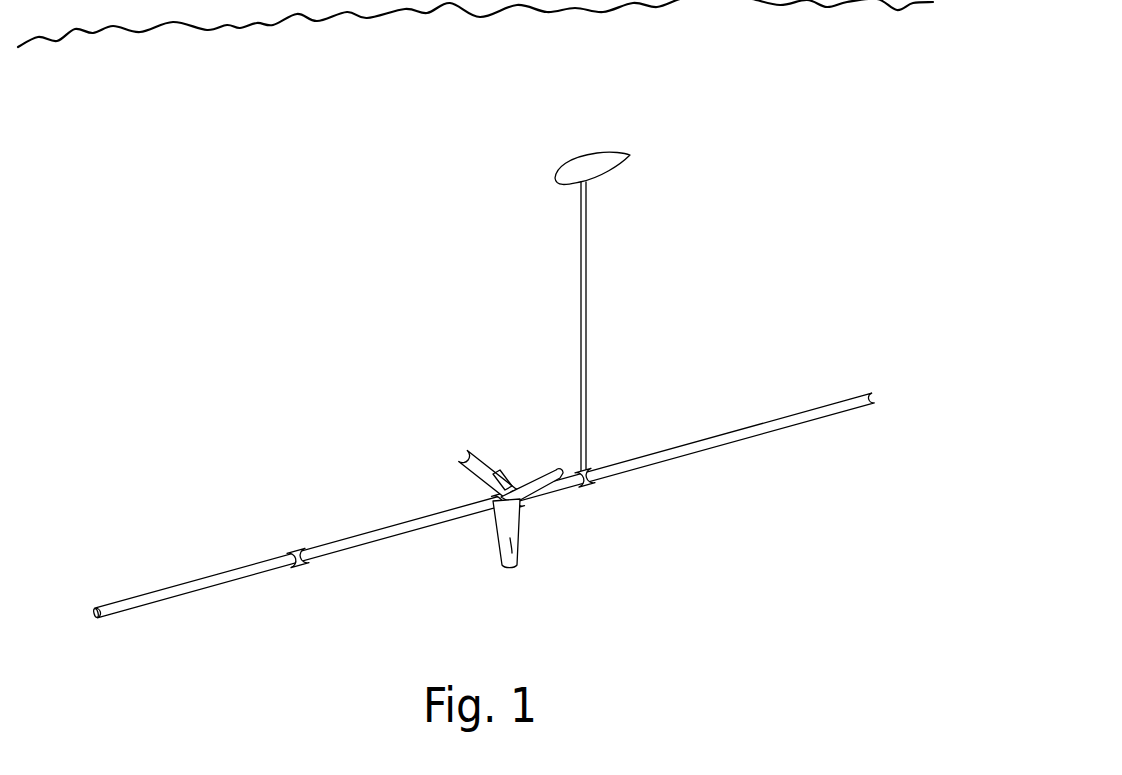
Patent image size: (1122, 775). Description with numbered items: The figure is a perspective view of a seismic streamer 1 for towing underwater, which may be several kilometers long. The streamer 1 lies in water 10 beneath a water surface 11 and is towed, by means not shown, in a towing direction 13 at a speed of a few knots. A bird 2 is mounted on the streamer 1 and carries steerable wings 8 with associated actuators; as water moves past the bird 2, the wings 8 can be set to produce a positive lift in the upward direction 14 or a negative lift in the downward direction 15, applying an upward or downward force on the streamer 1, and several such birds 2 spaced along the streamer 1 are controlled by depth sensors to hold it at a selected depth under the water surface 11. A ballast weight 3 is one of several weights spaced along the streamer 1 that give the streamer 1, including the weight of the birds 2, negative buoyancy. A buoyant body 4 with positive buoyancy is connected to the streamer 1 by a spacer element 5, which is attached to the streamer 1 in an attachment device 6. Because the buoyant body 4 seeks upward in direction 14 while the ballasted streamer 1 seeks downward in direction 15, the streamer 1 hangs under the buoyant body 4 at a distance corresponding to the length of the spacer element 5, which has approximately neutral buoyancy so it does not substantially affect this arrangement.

The seismic streamer 1 is at (372, 533).
The bird 2 is at (490, 488).
The ballast weight 3 is at (297, 553).
The buoyant body 4 is at (558, 175).
The spacer element 5 is at (581, 347).
The attachment device 6 is at (592, 481).
The steerable wing 8 is at (475, 462).
The water 10 is at (212, 210).
The water surface 11 is at (723, 4).
The towing direction 13 is at (143, 634).
The upward direction 14 is at (621, 280).
The downward direction 15 is at (583, 558).